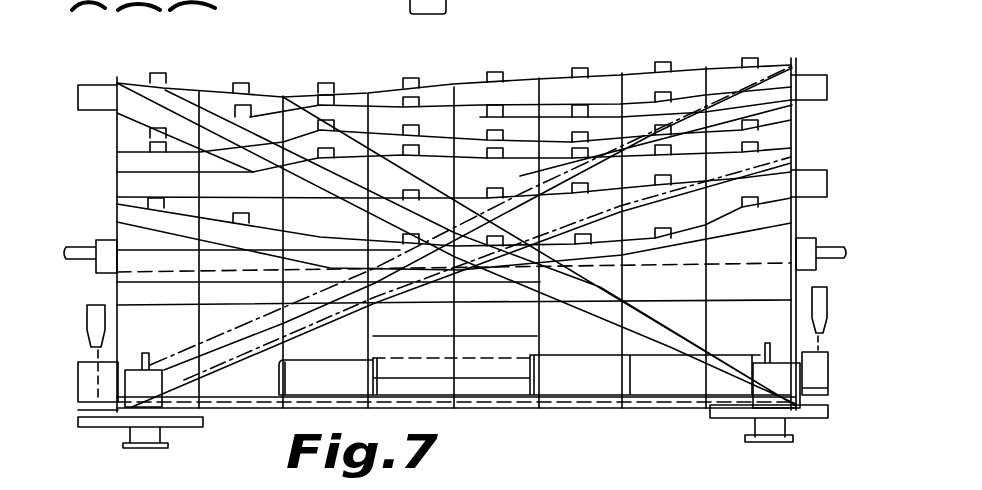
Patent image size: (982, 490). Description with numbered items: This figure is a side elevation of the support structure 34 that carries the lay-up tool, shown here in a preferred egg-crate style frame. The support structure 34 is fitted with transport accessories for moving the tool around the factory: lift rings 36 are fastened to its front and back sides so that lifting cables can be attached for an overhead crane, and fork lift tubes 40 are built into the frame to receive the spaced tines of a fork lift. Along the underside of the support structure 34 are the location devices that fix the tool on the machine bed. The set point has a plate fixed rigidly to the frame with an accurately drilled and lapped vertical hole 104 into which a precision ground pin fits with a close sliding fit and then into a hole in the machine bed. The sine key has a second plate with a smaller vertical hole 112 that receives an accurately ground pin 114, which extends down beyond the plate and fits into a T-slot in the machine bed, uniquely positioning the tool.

The support structure 34 is at (720, 40).
The lift rings 36 is at (84, 240).
The fork lift tubes 40 is at (77, 389).
The vertical hole 104 is at (102, 427).
The smaller vertical hole 112 is at (826, 426).
The ground pin 114 is at (828, 295).